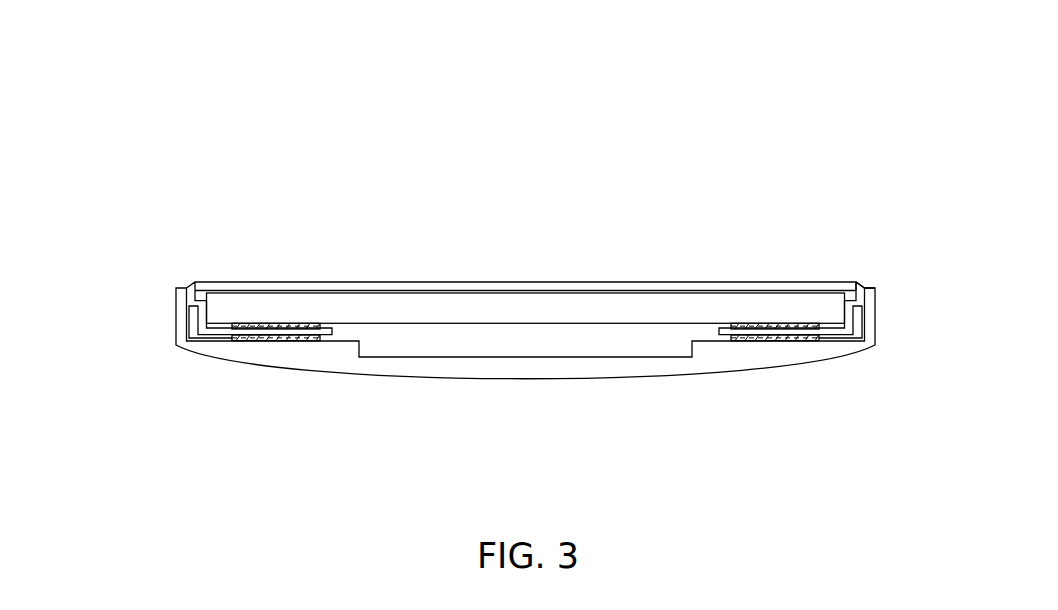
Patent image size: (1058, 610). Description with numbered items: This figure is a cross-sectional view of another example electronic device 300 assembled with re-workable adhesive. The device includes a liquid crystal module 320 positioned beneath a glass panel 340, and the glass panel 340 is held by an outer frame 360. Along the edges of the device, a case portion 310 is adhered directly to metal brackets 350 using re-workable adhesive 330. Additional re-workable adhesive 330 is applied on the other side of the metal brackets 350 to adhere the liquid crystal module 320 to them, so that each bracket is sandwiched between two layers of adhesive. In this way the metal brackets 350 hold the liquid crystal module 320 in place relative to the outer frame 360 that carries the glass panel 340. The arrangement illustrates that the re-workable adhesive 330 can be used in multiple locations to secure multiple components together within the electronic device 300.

The electronic device 300 is at (197, 129).
The case portion 310 is at (612, 372).
The liquid crystal module 320 is at (535, 312).
The re-workable adhesive 330 is at (300, 323).
The glass panel 340 is at (636, 286).
The metal brackets 350 is at (215, 333).
The outer frame 360 is at (862, 287).